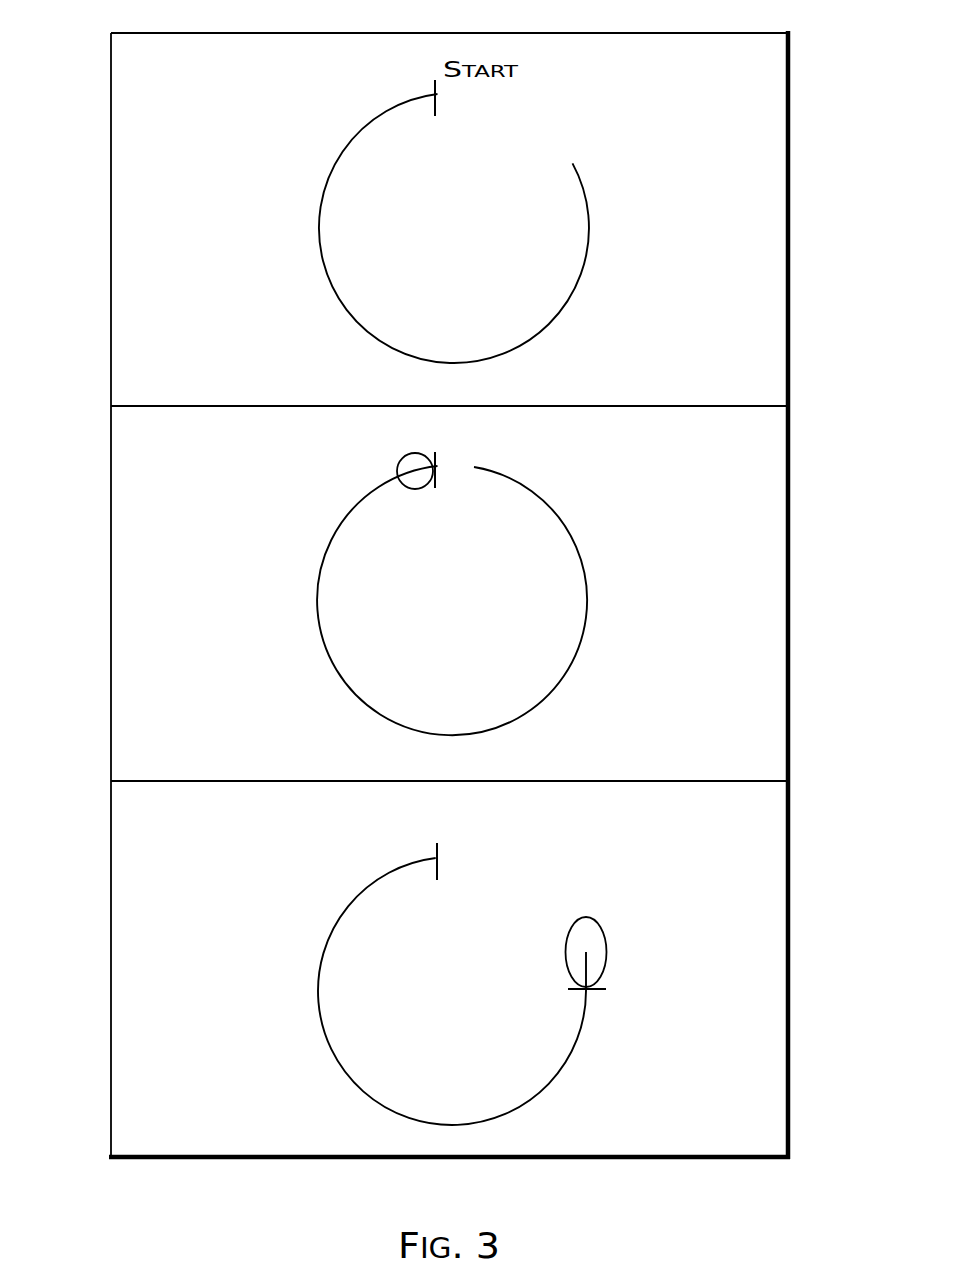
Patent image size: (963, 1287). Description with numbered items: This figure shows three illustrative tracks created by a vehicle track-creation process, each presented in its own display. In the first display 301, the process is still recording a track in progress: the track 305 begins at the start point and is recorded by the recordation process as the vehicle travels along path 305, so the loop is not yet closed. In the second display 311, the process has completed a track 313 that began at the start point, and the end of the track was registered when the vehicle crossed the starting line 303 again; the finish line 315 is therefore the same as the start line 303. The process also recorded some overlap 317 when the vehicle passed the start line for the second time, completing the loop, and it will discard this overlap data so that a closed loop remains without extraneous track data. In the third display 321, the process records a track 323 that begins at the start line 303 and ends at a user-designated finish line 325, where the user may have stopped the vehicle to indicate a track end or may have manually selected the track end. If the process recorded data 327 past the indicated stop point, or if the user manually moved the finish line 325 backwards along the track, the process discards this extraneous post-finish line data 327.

The display 301 is at (762, 71).
The start line 303 is at (522, 441).
The track 305 is at (570, 303).
The display 311 is at (762, 453).
The track 313 is at (563, 677).
The finish line 315 is at (398, 505).
The overlap 317 is at (396, 466).
The display 321 is at (762, 826).
The track 323 is at (560, 1073).
The finish line 325 is at (705, 990).
The post-finish line data 327 is at (606, 936).